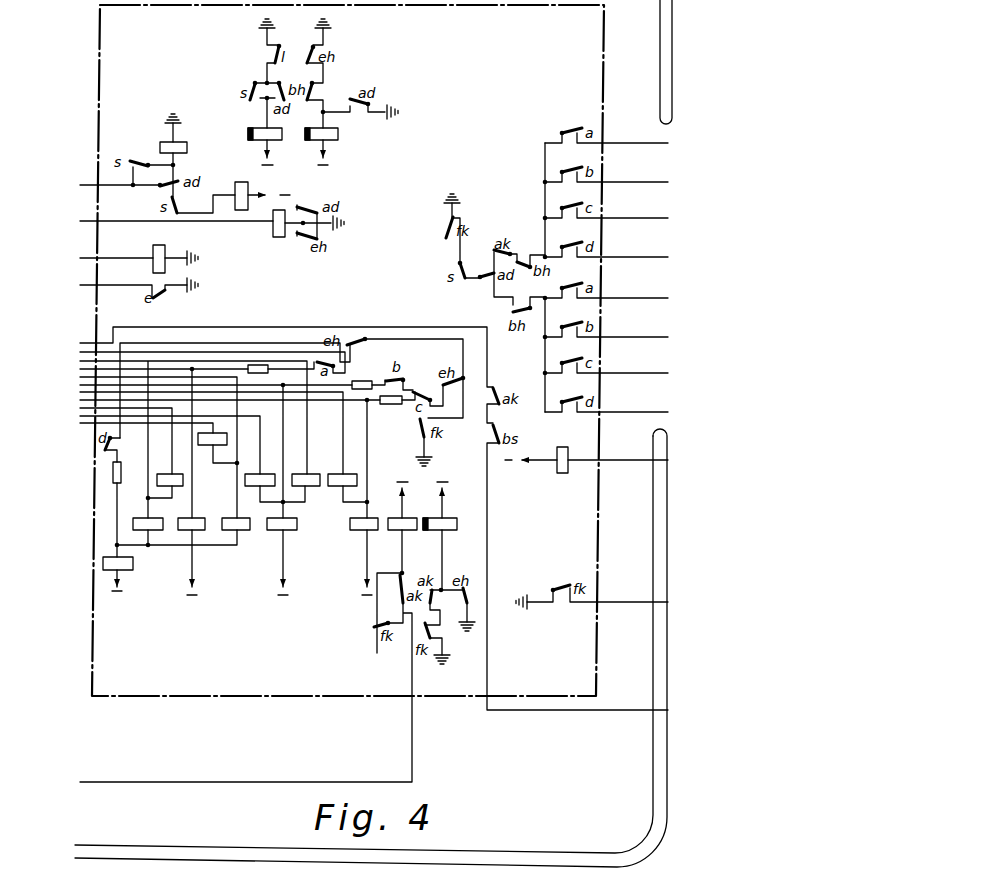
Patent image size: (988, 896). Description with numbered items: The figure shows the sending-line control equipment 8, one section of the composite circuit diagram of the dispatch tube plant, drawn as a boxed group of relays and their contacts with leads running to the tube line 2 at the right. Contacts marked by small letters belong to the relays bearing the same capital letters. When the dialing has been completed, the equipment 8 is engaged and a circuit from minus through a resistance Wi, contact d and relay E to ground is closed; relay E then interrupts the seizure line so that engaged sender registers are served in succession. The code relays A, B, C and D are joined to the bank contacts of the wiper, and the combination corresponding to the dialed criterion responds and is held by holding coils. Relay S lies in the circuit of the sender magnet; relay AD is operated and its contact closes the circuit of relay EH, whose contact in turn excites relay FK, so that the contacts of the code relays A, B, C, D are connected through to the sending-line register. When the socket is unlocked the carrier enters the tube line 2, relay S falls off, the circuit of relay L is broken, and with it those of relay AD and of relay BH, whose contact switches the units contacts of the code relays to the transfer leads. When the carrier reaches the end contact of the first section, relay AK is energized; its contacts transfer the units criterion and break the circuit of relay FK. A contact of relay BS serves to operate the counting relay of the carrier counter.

The tube line 2 is at (658, 749).
The sending-line control equipment 8 is at (348, 350).
The relay S is at (180, 135).
The relay AD is at (271, 146).
The relay EH is at (328, 146).
The relay L is at (262, 194).
The relay BH is at (264, 227).
The relay E is at (152, 258).
The relay BS is at (586, 458).
The relay AK is at (405, 517).
The relay FK is at (446, 517).
The code relay A is at (204, 511).
The code relay B is at (226, 502).
The code relay C is at (288, 491).
The code relay D is at (230, 524).
The resistance Wi is at (257, 419).